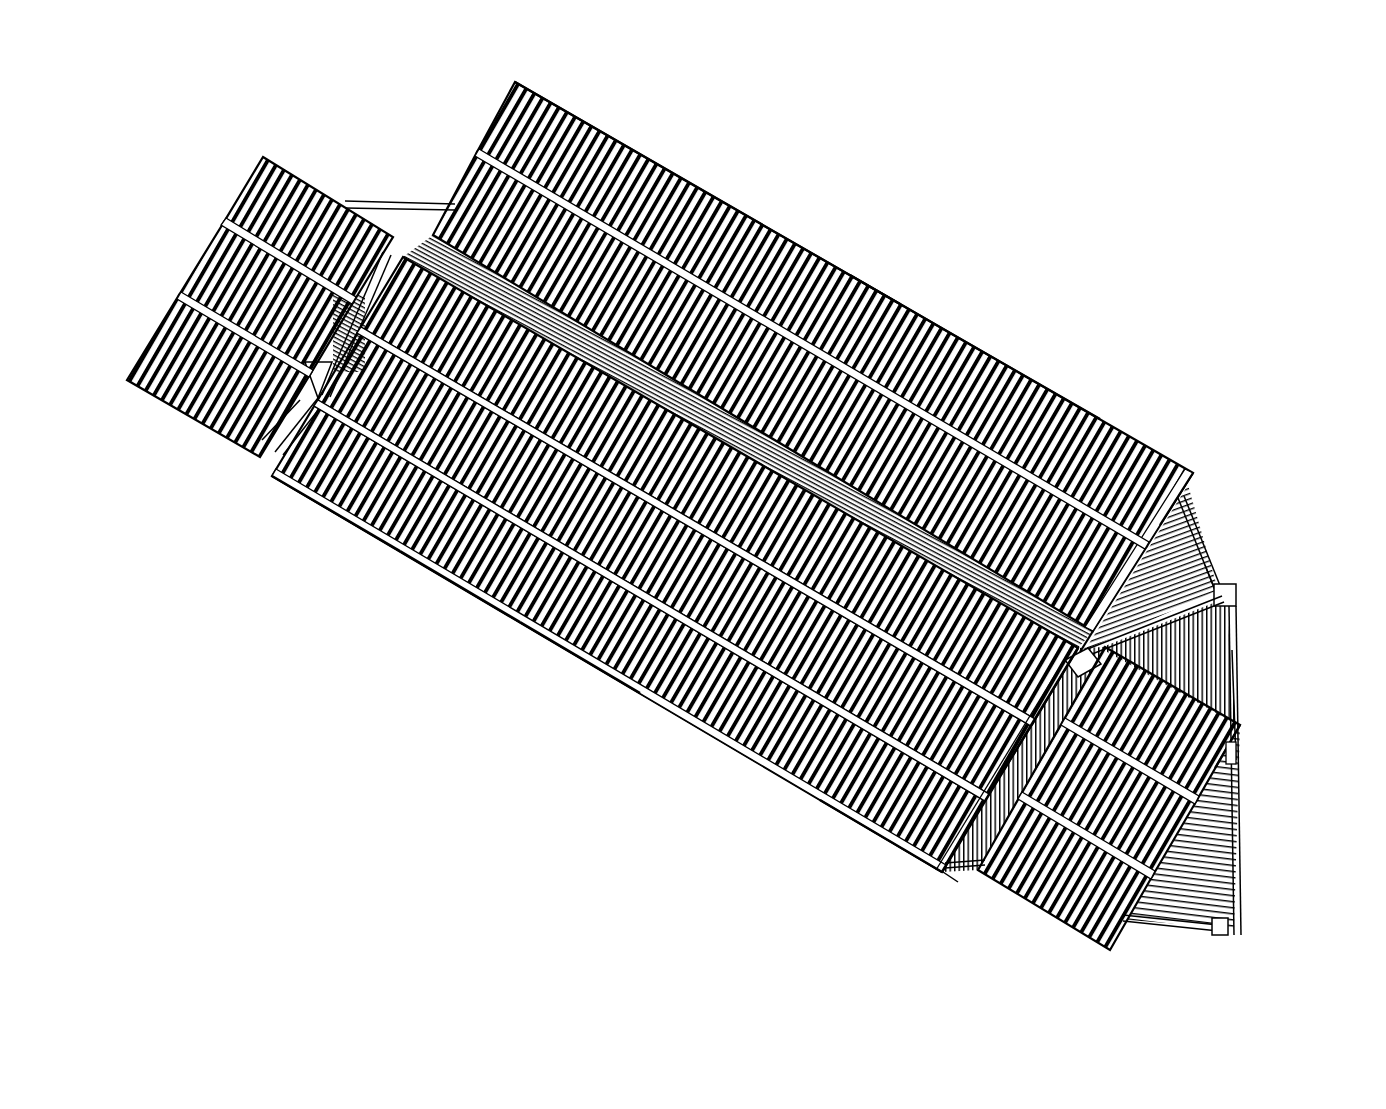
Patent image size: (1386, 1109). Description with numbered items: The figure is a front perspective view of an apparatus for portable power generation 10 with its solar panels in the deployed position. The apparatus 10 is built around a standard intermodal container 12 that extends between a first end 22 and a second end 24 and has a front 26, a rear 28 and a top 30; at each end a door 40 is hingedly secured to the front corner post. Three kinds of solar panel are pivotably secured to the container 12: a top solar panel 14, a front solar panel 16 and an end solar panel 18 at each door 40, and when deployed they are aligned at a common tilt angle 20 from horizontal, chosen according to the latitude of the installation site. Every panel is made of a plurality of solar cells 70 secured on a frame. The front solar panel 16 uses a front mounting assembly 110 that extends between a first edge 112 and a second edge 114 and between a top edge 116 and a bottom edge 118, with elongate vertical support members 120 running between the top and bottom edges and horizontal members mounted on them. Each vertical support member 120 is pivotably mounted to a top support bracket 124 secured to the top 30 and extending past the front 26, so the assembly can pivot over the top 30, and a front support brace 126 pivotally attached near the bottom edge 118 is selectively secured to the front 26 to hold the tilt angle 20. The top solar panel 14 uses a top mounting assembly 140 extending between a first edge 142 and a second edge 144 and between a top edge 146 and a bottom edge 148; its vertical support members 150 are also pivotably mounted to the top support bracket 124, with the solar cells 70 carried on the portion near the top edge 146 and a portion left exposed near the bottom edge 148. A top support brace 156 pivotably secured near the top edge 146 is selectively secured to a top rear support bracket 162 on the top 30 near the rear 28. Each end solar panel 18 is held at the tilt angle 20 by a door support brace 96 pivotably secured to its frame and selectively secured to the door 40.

The apparatus for portable power generation 10 is at (1055, 208).
The intermodal container 12 is at (1234, 640).
The top solar panel 14 is at (776, 433).
The front solar panel 16 is at (611, 593).
The end solar panel 18 is at (736, 516).
The tilt angle 20 is at (1196, 503).
The first end 22 is at (413, 243).
The second end 24 is at (1251, 684).
The front 26 is at (903, 845).
The rear 28 is at (1238, 657).
The top 30 is at (1178, 592).
The door 40 is at (1240, 858).
The solar cells 70 is at (670, 183).
The door support brace 96 is at (1148, 925).
The front mounting assembly 110 is at (543, 640).
The first edge 112 is at (262, 470).
The second edge 114 is at (953, 880).
The top edge 116 is at (757, 222).
The bottom edge 118 is at (430, 582).
The vertical support members 120 is at (945, 870).
The top support bracket 124 is at (1078, 650).
The front support brace 126 is at (965, 865).
The top mounting assembly 140 is at (928, 312).
The first edge 142 is at (482, 133).
The second edge 144 is at (1198, 488).
The top edge 146 is at (1015, 372).
The bottom edge 148 is at (1236, 748).
The vertical support members 150 is at (1187, 490).
The top support brace 156 is at (1250, 562).
The top rear support bracket 162 is at (1265, 574).